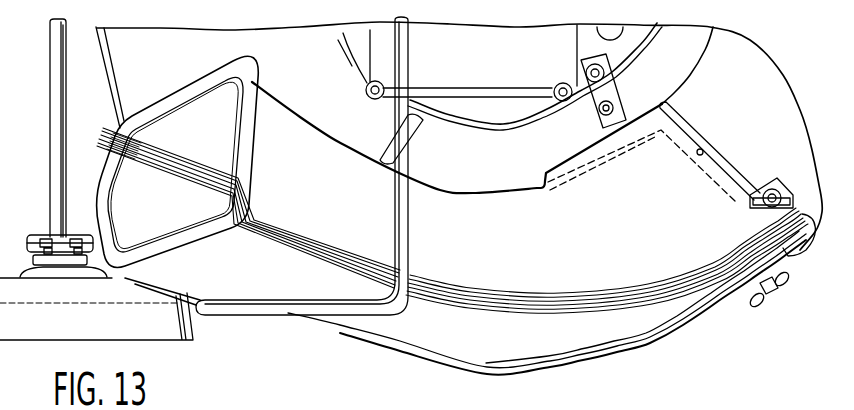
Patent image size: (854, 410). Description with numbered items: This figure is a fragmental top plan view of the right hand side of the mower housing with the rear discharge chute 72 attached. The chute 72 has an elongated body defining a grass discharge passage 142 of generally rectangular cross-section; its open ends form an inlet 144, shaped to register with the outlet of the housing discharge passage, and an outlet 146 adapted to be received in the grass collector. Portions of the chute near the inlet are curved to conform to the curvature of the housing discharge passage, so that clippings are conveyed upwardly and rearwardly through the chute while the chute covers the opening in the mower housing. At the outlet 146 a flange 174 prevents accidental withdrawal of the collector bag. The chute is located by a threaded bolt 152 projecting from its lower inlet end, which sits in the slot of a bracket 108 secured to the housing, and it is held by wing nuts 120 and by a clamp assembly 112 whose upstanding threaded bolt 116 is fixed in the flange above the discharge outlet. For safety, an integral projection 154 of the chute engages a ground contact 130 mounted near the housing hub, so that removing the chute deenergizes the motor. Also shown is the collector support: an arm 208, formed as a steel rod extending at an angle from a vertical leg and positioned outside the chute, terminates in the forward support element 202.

The rear discharge chute 72 is at (487, 337).
The bracket 108 is at (785, 256).
The clamp assembly 112 is at (767, 181).
The threaded bolt 116 is at (590, 409).
The wing nut 120 is at (619, 409).
The ground contact 130 is at (618, 120).
The grass discharge passage 142 is at (156, 178).
The inlet 144 is at (702, 151).
The outlet 146 is at (186, 244).
The threaded bolt 152 is at (772, 302).
The integral projection 154 is at (600, 154).
The flange 174 is at (259, 141).
The forward support element 202 is at (408, 216).
The arm 208 is at (273, 318).